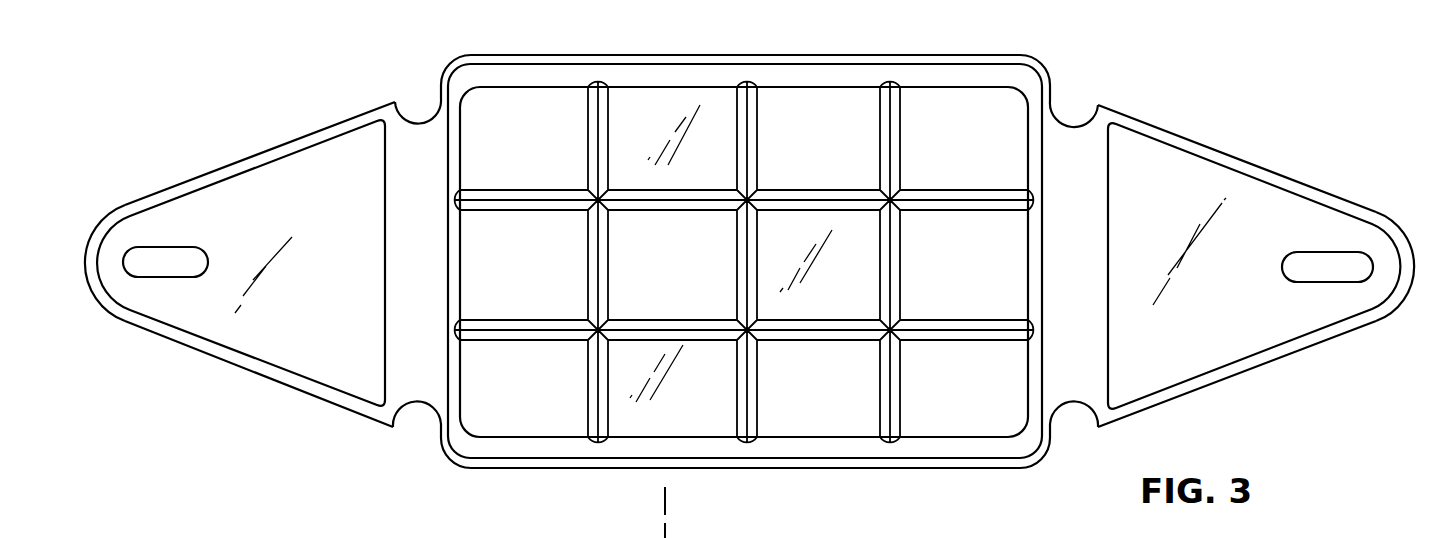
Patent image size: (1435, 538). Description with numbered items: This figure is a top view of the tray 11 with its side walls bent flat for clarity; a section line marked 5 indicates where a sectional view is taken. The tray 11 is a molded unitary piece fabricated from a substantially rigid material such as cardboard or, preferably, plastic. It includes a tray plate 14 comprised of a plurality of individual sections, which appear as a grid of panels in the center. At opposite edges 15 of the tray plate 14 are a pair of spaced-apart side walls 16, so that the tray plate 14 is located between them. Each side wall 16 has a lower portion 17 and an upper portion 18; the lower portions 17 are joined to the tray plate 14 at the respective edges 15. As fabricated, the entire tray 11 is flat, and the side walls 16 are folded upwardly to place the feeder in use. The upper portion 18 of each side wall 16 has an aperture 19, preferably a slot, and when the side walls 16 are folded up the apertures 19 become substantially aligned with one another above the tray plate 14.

The tray 11 is at (590, 50).
The tray plate 14 is at (765, 56).
The edges 15 is at (416, 133).
The side walls 16 is at (242, 148).
The lower portion 17 is at (345, 160).
The upper portion 18 is at (152, 215).
The apertures 19 is at (165, 265).
The section line for FIG. 5 is at (650, 505).